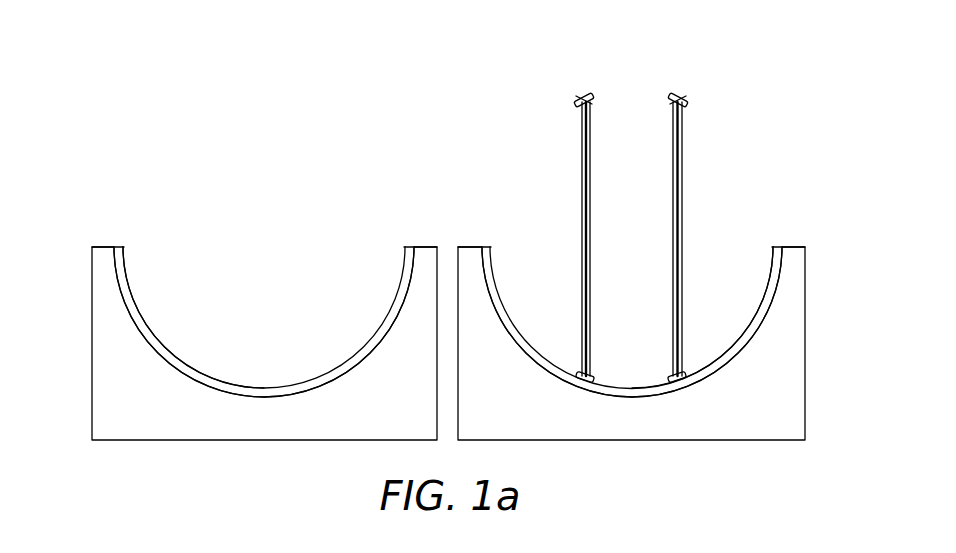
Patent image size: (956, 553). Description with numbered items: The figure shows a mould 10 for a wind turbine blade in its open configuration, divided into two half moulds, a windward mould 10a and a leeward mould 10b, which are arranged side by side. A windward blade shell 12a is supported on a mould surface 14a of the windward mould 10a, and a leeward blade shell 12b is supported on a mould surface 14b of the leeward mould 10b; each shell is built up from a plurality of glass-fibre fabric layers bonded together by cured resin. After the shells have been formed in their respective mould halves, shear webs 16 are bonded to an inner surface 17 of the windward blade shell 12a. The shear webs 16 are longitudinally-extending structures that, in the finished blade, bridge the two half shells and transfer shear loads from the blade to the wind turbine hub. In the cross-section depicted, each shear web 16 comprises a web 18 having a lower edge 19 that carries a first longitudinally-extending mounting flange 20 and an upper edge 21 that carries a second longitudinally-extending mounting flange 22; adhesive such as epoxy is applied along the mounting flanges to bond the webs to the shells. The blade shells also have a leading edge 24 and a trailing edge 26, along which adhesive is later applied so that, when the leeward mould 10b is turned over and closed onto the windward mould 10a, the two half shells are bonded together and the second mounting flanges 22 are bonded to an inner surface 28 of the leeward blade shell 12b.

The mould 10 is at (435, 149).
The windward mould 10a is at (663, 343).
The leeward mould 10b is at (231, 343).
The windward blade shell 12a is at (770, 283).
The leeward blade shell 12b is at (353, 362).
The mould surface 14a is at (497, 290).
The mould surface 14b is at (125, 290).
The shear webs 16 is at (631, 213).
The inner surface 17 is at (745, 325).
The web 18 is at (582, 168).
The lower edge 19 is at (669, 371).
The first longitudinally-extending mounting flange 20 is at (582, 375).
The upper edge 21 is at (595, 90).
The second longitudinally-extending mounting flange 22 is at (580, 96).
The leading edge 24 is at (405, 247).
The trailing edge 26 is at (114, 247).
The inner surface 28 is at (190, 363).